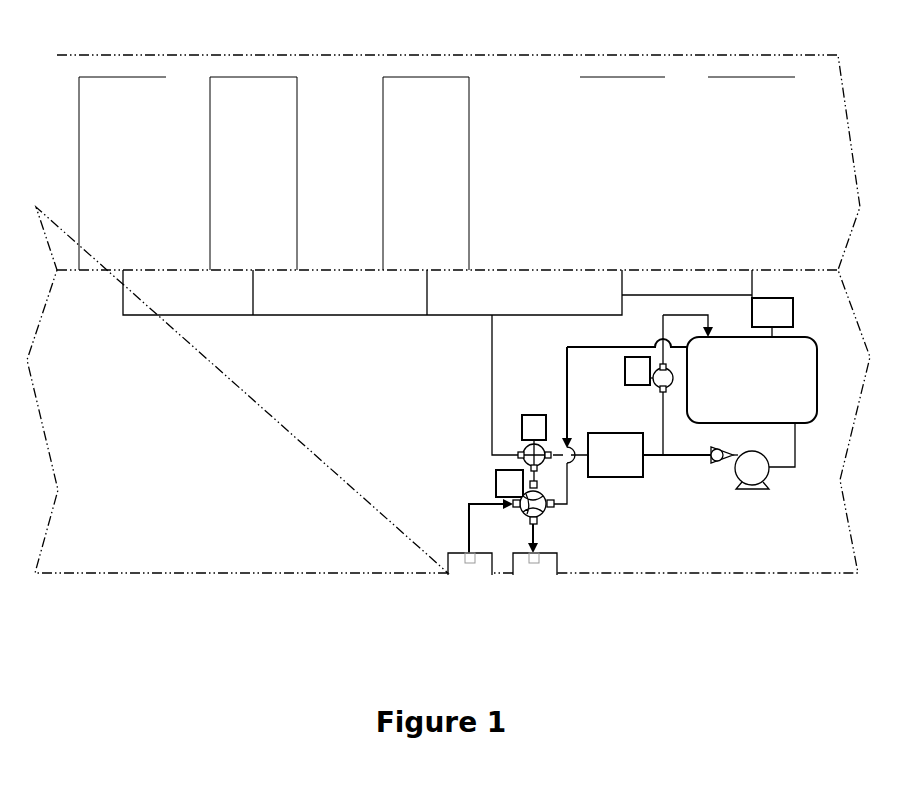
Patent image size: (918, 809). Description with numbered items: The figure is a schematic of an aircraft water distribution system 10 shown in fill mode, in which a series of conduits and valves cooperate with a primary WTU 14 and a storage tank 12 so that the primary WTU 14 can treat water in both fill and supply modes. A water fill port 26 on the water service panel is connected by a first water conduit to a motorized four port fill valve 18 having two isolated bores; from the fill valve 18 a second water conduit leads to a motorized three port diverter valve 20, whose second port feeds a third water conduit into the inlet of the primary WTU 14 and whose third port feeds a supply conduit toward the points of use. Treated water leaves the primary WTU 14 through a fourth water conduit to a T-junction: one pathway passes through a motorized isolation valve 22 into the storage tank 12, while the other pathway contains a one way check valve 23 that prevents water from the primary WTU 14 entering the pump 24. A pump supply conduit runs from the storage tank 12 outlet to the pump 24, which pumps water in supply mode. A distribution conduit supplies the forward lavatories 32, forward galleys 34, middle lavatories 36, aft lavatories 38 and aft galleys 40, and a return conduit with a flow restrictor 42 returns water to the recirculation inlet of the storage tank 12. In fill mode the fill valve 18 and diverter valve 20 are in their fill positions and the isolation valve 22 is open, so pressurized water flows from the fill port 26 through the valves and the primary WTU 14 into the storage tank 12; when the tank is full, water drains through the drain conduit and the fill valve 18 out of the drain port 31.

The water distribution system 10 is at (294, 451).
The storage tank 12 is at (817, 380).
The primary WTU 14 is at (617, 477).
The four port fill valve 18 is at (541, 517).
The three port diverter valve 20 is at (522, 428).
The motorized isolation valve 22 is at (625, 382).
The one way check valve 23 is at (717, 462).
The pump 24 is at (755, 490).
The water fill port 26 is at (480, 605).
The drain port 31 is at (535, 605).
The forward lavatories 32 is at (92, 270).
The forward galleys 34 is at (243, 270).
The middle lavatories 36 is at (393, 270).
The aft lavatories 38 is at (578, 198).
The aft galleys 40 is at (795, 176).
The flow restrictor 42 is at (793, 312).